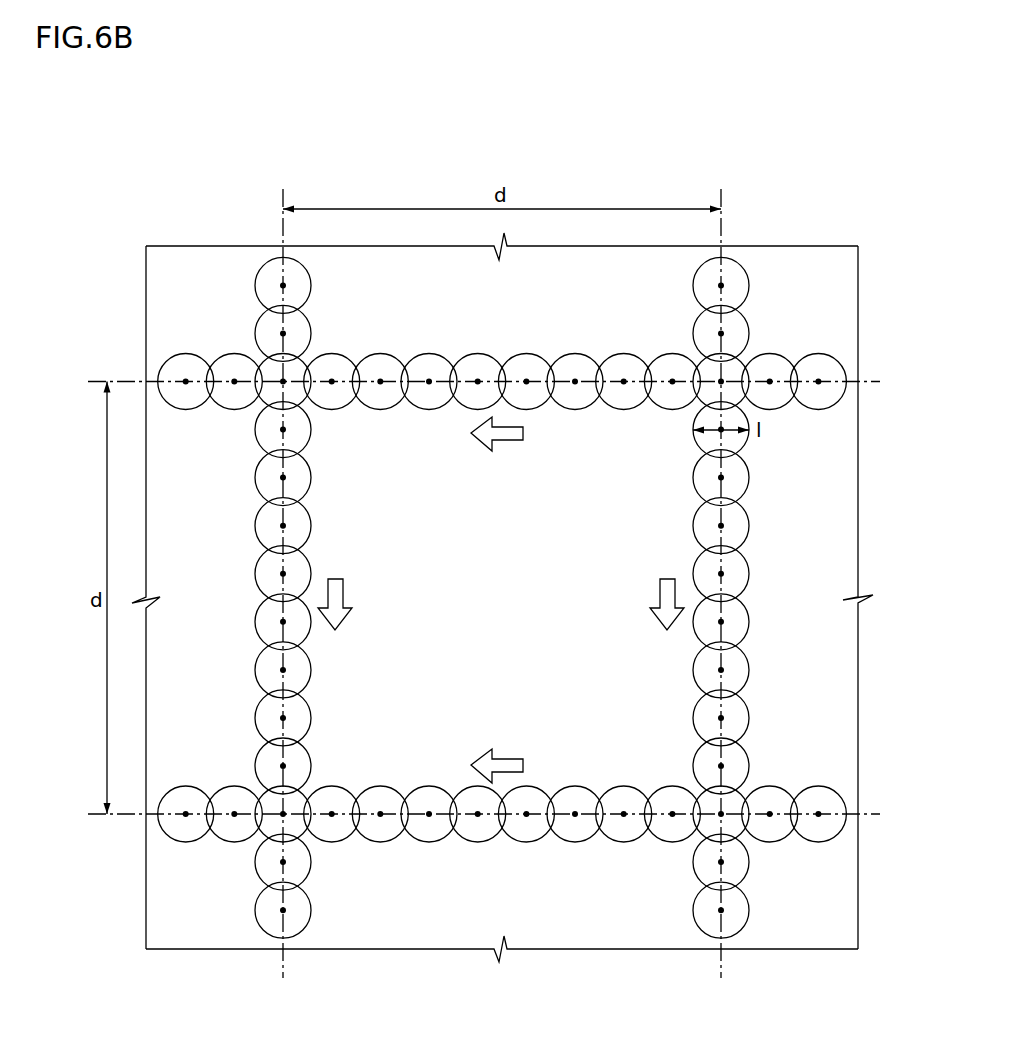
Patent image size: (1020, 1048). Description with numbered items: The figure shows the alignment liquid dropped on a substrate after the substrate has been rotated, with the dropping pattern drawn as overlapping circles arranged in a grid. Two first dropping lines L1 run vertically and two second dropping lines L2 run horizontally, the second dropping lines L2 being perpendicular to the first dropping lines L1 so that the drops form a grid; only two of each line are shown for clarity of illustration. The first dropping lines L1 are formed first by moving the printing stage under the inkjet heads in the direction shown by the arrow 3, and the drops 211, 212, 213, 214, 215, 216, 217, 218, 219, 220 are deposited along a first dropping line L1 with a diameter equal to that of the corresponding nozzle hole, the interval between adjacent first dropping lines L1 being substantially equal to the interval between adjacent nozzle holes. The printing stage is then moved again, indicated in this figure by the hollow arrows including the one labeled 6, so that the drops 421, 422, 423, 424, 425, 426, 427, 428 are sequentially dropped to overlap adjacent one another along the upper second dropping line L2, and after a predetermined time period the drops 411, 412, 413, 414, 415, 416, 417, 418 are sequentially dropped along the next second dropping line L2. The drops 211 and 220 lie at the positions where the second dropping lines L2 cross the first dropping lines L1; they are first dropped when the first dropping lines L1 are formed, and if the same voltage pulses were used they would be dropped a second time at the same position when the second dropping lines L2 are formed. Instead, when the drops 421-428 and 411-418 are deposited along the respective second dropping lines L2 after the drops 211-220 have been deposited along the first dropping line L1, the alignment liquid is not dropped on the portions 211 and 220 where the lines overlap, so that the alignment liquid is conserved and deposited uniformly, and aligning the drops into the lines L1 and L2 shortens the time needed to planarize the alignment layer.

The drop 211 is at (247, 379).
The drop 212 is at (256, 430).
The drop 213 is at (256, 478).
The drop 214 is at (256, 526).
The drop 215 is at (256, 574).
The drop 216 is at (256, 622).
The drop 217 is at (256, 670).
The drop 218 is at (256, 718).
The drop 219 is at (256, 766).
The drop 220 is at (247, 818).
The drop 411 is at (672, 842).
The drop 412 is at (624, 842).
The drop 413 is at (575, 842).
The drop 414 is at (526, 842).
The drop 415 is at (478, 842).
The drop 416 is at (429, 842).
The drop 417 is at (380, 842).
The drop 418 is at (332, 842).
The drop 421 is at (672, 354).
The drop 422 is at (624, 354).
The drop 423 is at (575, 354).
The drop 424 is at (526, 354).
The drop 425 is at (478, 354).
The drop 426 is at (429, 354).
The drop 427 is at (380, 354).
The drop 428 is at (332, 354).
The arrow 3 is at (344, 590).
The scanning direction 6 is at (508, 441).
The first dropping line L1 is at (530, 608).
The second dropping line L2 is at (473, 601).